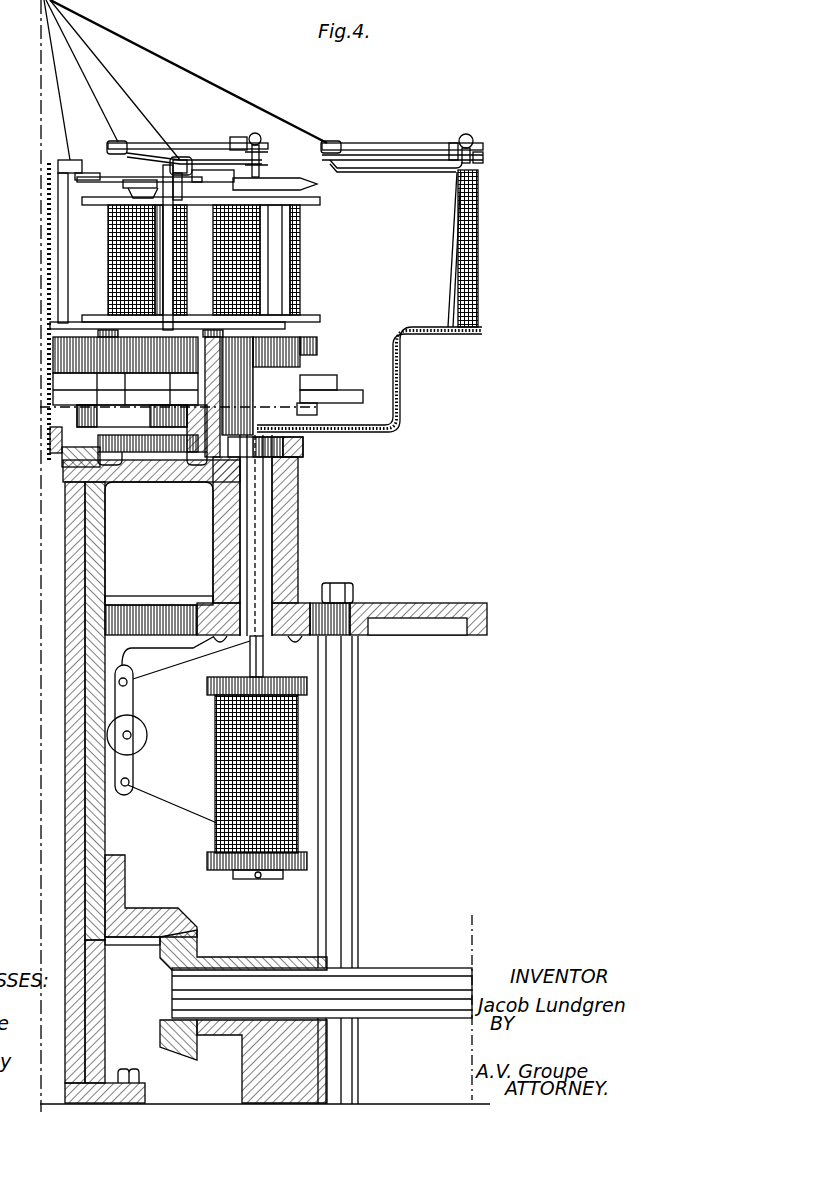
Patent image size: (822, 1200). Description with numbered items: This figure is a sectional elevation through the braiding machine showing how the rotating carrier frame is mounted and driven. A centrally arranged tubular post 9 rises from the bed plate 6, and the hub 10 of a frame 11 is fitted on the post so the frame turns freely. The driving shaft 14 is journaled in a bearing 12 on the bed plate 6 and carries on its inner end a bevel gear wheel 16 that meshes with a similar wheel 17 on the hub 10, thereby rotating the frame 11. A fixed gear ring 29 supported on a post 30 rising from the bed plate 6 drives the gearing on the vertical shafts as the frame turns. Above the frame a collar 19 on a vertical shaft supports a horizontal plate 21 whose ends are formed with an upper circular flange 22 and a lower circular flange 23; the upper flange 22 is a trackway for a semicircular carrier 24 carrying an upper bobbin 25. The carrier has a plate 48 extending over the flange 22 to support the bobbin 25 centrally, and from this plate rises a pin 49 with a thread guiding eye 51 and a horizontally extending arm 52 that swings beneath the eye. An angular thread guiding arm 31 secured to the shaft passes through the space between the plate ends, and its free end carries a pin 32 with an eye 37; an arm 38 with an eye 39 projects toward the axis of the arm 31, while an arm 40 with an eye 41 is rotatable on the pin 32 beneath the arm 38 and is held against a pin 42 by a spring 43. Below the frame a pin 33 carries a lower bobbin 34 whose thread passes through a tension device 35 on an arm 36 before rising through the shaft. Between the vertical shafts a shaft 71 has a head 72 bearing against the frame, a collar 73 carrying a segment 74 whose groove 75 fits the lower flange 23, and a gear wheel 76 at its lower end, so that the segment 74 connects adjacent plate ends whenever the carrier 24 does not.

The bed plate 6 is at (410, 1102).
The tubular post 9 is at (93, 995).
The hub 10 is at (103, 552).
The frame 11 is at (296, 500).
The bearing 12 is at (262, 1080).
The driving shaft 14 is at (402, 978).
The bevel gear wheel 16 is at (200, 945).
The bevel gear wheel 17 is at (152, 912).
The collar 19 is at (63, 268).
The plate 21 is at (345, 398).
The upper circular flange 22 is at (298, 362).
The lower circular flange 23 is at (307, 412).
The carrier 24 is at (245, 340).
The bobbin 25 is at (108, 250).
The gear ring 29 is at (429, 615).
The post 30 is at (360, 805).
The thread guiding arm 31 is at (401, 380).
The pin 32 is at (260, 133).
The pin 33 is at (263, 656).
The bobbin 34 is at (216, 830).
The tension device 35 is at (140, 736).
The arm 36 is at (135, 770).
The eye 37 is at (456, 175).
The arm 38 is at (183, 143).
The thread-guiding eye 39 is at (118, 141).
The arm 40 is at (208, 155).
The thread-guiding eye 41 is at (145, 156).
The pin 42 is at (237, 137).
The spring 43 is at (479, 245).
The plate 48 is at (265, 315).
The pin 49 is at (172, 270).
The thread guiding eye 51 is at (70, 158).
The arm 52 is at (145, 180).
The shaft 71 is at (265, 535).
The head 72 is at (257, 446).
The collar 73 is at (305, 447).
The segment 74 is at (178, 415).
The groove 75 is at (190, 428).
The gear wheel 76 is at (158, 612).